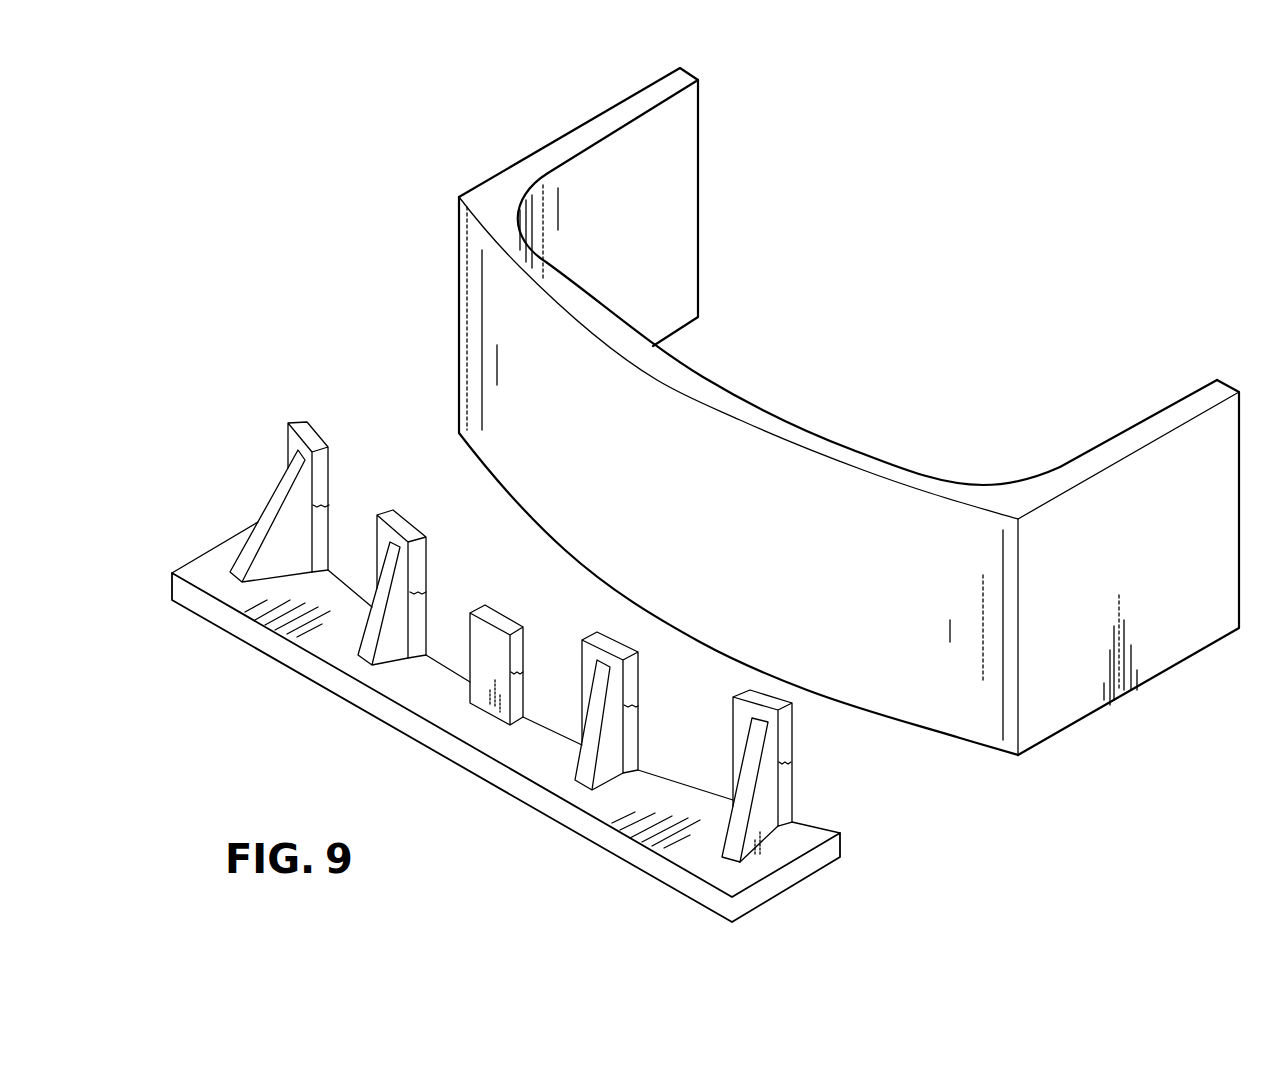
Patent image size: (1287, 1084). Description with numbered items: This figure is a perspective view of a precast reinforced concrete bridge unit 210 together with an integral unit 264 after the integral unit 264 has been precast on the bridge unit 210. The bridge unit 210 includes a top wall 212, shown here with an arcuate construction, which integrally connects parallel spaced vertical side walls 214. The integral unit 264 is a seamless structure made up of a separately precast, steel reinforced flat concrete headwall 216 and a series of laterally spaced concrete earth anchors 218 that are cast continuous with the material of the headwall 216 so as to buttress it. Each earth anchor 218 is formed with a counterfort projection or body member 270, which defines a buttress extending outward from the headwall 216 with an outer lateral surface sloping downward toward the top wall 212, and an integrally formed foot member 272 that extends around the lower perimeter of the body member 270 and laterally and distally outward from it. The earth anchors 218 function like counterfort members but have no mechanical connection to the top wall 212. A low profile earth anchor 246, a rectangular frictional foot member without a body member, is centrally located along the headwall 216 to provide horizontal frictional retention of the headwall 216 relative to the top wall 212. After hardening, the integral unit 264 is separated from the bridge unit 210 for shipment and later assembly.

The bridge unit 210 is at (852, 442).
The top wall 212 is at (932, 695).
The side wall 214 is at (627, 113).
The headwall 216 is at (628, 862).
The earth anchor 218 is at (780, 809).
The low profile earth anchor 246 is at (495, 618).
The integral unit 264 is at (753, 813).
The body member 270 is at (752, 762).
The foot member 272 is at (793, 788).